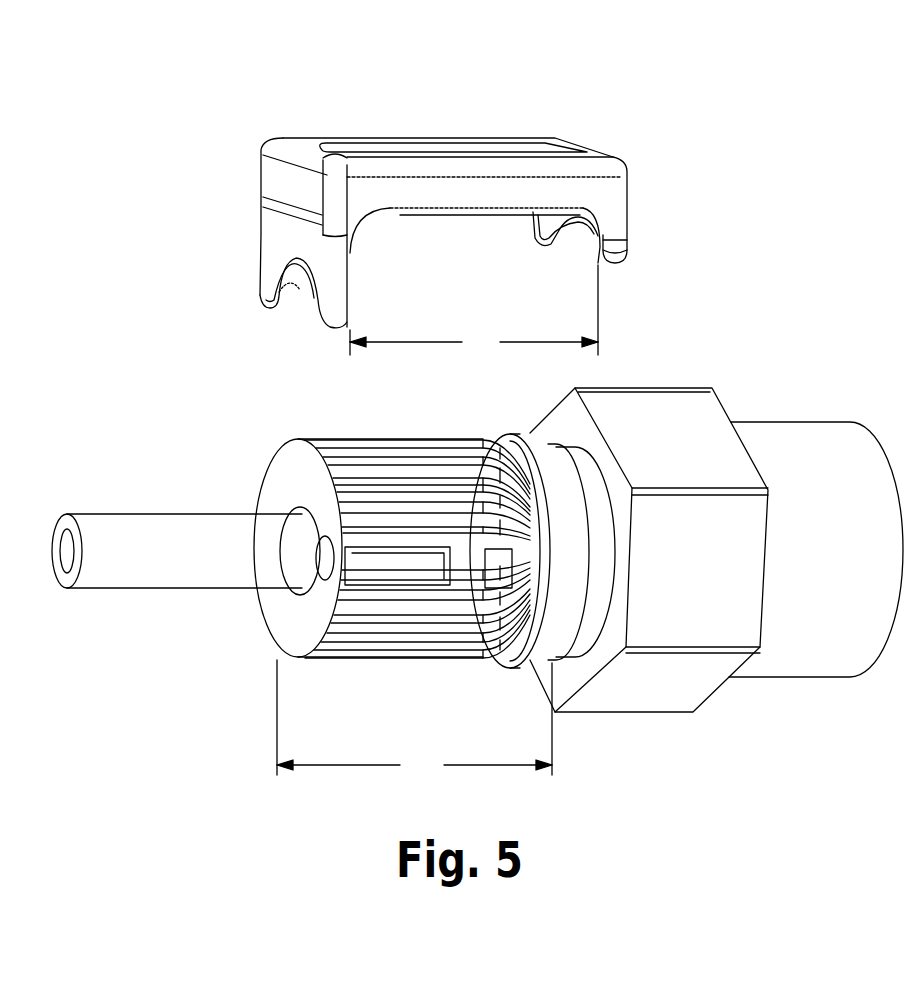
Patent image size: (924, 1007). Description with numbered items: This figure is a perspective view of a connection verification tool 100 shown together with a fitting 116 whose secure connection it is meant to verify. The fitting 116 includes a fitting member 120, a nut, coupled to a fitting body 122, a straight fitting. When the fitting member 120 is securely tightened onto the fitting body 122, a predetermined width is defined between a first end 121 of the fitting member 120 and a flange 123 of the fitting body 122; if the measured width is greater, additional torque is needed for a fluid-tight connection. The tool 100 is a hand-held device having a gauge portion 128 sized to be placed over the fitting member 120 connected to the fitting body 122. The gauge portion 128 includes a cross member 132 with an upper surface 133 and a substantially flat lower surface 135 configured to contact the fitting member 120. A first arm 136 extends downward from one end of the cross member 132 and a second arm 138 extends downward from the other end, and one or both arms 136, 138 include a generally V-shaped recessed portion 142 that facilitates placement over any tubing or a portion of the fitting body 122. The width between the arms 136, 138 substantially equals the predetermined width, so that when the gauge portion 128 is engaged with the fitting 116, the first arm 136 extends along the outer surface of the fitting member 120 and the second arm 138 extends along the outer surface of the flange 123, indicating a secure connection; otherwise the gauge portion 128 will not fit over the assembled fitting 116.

The connection verification tool 100 is at (458, 199).
The gauge portion 128 is at (443, 185).
The cross member 132 is at (293, 142).
The upper surface 133 is at (475, 137).
The lower surface 135 is at (450, 217).
The first arm 136 is at (263, 280).
The second arm 138 is at (627, 235).
The recessed portion 142 is at (310, 303).
The fitting 116 is at (477, 555).
The fitting member 120 is at (351, 591).
The first end 121 is at (287, 627).
The fitting body 122 is at (657, 712).
The flange 123 is at (523, 668).